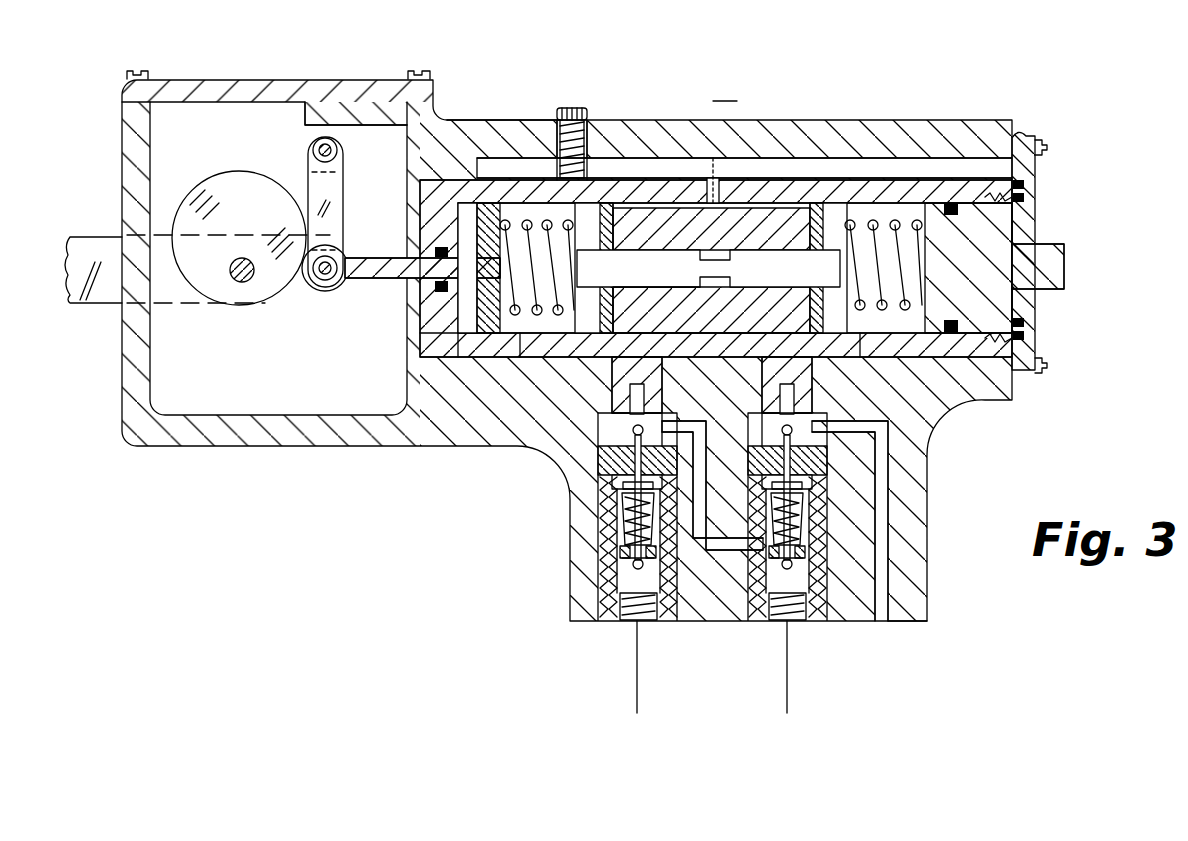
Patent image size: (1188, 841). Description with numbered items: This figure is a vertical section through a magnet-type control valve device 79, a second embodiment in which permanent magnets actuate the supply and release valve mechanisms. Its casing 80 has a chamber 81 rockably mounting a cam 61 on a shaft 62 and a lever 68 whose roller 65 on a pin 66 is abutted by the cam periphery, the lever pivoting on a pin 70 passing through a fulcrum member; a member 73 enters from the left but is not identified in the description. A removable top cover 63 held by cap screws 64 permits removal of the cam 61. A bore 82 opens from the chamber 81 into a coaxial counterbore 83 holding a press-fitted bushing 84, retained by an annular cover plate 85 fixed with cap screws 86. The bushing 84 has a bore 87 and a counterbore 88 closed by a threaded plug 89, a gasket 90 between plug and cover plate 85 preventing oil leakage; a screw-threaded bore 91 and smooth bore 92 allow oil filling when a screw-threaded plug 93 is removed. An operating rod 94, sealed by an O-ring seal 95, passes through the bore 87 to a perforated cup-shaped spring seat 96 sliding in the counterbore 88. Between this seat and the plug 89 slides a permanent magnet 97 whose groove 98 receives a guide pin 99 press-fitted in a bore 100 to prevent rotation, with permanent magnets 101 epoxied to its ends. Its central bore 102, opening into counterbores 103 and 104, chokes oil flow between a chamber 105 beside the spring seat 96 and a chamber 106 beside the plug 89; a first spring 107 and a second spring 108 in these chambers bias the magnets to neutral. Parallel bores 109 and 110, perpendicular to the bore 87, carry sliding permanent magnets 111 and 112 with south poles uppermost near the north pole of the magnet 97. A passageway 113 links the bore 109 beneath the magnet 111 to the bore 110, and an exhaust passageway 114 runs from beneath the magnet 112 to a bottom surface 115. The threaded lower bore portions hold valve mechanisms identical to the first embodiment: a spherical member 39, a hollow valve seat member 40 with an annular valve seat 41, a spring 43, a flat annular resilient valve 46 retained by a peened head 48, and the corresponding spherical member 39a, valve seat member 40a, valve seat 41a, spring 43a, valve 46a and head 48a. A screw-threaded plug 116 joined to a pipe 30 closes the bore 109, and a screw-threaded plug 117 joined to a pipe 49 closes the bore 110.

The pipe 30 is at (648, 615).
The spherical member 39 is at (633, 430).
The spherical member 39a is at (792, 430).
The hollow valve seat member 40 is at (628, 520).
The valve spring 40a is at (805, 520).
The annular valve seat 41 is at (622, 545).
The valve seat 41a is at (797, 545).
The spring 43 is at (612, 498).
The valve guide nut 43a is at (808, 498).
The flat annular resilient valve 46 is at (636, 569).
The valve 46a is at (784, 568).
The head 48 is at (640, 560).
The valve seat disc 48a is at (800, 560).
The pipe 49 is at (782, 615).
The cam 61 is at (242, 188).
The shaft 62 is at (243, 283).
The removable top cover 63 is at (272, 92).
The cap screws 64 is at (137, 73).
The roller 65 is at (308, 285).
The pin 66 is at (328, 280).
The lever 68 is at (342, 208).
The pin 70 is at (313, 153).
The drive shaft 73 is at (92, 250).
The magnet-type control valve device 79 is at (725, 92).
The casing 80 is at (482, 135).
The chamber 81 is at (360, 118).
The bore 82 is at (462, 236).
The counterbore 83 is at (425, 182).
The bushing 84 is at (530, 195).
The annular cover plate 85 is at (1035, 175).
The cap screws 86 is at (1047, 147).
The bore 87 is at (437, 272).
The counterbore 88 is at (430, 334).
The plug 89 is at (975, 242).
The gasket 90 is at (1025, 196).
The screw-threaded bore 91 is at (580, 138).
The smooth bore 92 is at (575, 190).
The screw-threaded plug 93 is at (570, 110).
The operating rod 94 is at (398, 262).
The O-ring seal 95 is at (470, 318).
The perforated cup-shaped spring seat 96 is at (497, 215).
The permanent magnet 97 is at (760, 205).
The groove 98 is at (658, 195).
The guide pin 99 is at (712, 190).
The bore 100 is at (722, 195).
The permanent magnets 101 is at (814, 244).
The central bore 102 is at (722, 268).
The counterbore 103 is at (610, 262).
The counterbore 104 is at (788, 287).
The chamber 105 is at (556, 338).
The chamber 106 is at (872, 338).
The first spring 107 is at (505, 345).
The second spring 108 is at (905, 300).
The bore 109 is at (615, 422).
The bore 110 is at (763, 428).
The permanent magnet 111 is at (615, 372).
The permanent magnet 112 is at (808, 372).
The passageway 113 is at (698, 428).
The exhaust passageway 114 is at (884, 476).
The surface 115 is at (905, 621).
The screw-threaded plug 116 is at (610, 618).
The screw-threaded plug 117 is at (810, 620).